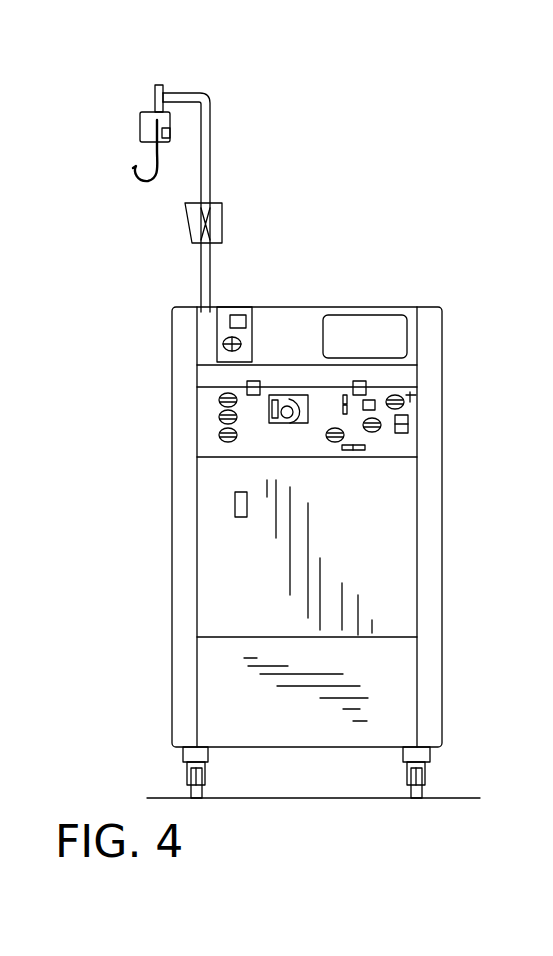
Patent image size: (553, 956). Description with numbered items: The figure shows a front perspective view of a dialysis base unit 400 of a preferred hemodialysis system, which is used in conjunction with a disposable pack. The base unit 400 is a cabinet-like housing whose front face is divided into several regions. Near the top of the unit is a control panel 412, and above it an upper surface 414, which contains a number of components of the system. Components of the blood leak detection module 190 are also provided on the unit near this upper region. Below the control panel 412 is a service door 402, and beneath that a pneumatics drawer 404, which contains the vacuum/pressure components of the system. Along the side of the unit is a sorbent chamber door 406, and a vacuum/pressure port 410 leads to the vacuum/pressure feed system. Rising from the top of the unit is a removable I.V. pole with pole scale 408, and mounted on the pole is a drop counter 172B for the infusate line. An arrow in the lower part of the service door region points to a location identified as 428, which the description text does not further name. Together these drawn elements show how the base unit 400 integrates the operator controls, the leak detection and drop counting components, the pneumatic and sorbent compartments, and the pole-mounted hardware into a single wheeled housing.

The dialysis base unit 400 is at (326, 140).
The sorbent chamber door 406 is at (178, 497).
The control panel 412 is at (385, 326).
The blood leak detection module 190 is at (222, 343).
The upper surface 414 is at (412, 393).
The service door 402 is at (224, 540).
The vacuum/pressure port 410 is at (197, 627).
The pneumatics drawer 404 is at (221, 721).
The lower corner region 428 is at (392, 630).
The removable I.V. pole with pole scale 408 is at (140, 130).
The drop counter 172B is at (187, 230).